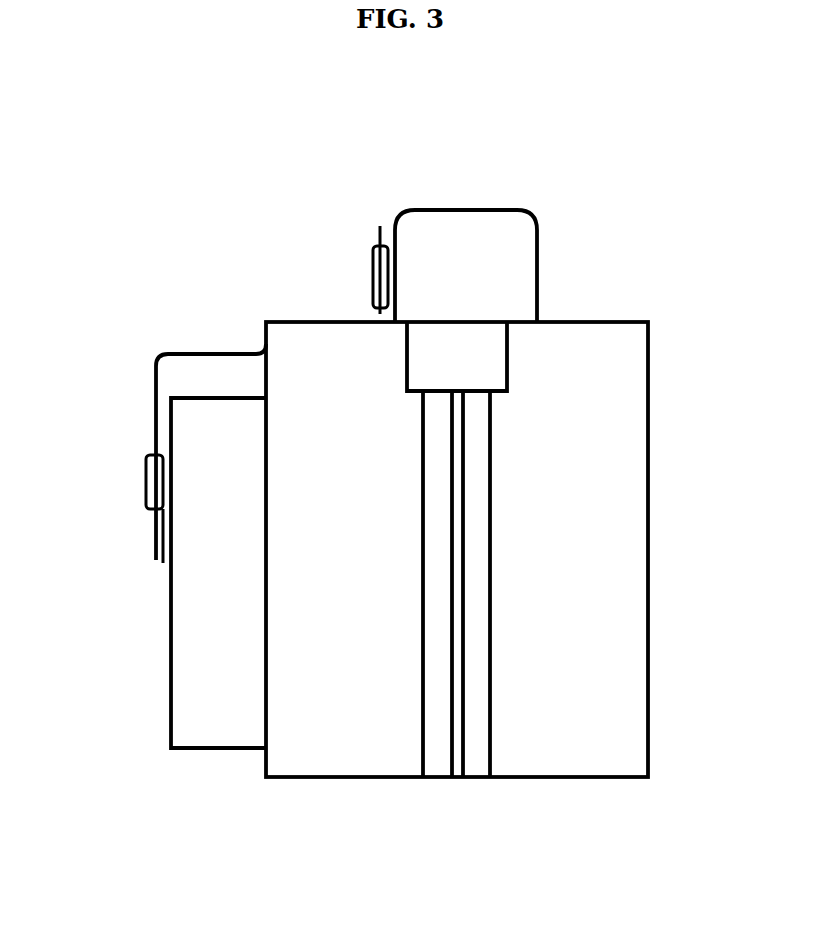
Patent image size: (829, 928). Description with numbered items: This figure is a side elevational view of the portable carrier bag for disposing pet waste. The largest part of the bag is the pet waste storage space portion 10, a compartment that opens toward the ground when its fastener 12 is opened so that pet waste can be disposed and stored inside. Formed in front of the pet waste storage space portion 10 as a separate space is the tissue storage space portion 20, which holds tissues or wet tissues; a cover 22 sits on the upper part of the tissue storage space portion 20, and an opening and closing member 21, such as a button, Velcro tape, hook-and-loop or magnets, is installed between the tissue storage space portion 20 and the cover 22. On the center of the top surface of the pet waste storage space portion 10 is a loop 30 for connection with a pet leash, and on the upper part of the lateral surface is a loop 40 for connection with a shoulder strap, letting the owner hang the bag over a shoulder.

The pet waste storage space portion 10 is at (580, 733).
The fastener 12 is at (464, 777).
The tissue storage space portion 20 is at (203, 705).
The opening and closing member 21 is at (143, 456).
The cover 22 is at (217, 352).
The loop for connection with a pet leash 30 is at (503, 209).
The loop for connection with a shoulder strap 40 is at (472, 345).